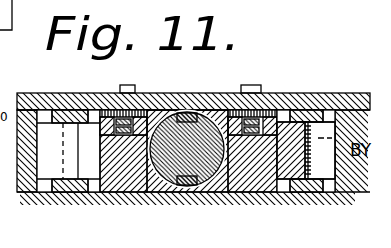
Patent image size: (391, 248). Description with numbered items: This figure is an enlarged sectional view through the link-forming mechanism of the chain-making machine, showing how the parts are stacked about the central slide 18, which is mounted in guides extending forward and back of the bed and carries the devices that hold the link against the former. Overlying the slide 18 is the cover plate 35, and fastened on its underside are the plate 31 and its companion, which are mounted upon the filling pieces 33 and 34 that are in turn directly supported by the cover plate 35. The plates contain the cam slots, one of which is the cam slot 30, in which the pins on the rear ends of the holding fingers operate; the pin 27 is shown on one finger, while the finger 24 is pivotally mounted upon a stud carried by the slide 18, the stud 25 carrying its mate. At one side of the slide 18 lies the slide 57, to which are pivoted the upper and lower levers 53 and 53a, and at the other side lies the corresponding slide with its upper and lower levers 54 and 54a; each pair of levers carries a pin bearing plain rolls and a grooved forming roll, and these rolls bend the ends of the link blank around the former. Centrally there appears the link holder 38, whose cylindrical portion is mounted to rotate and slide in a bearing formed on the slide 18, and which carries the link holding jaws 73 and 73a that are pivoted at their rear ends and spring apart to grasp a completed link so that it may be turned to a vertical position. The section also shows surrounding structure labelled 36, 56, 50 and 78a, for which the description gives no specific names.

The cover plate 35 is at (27, 93).
The nut 36 is at (126, 85).
The link holder 38 is at (238, 93).
The cam slot 30 is at (282, 110).
The slide 18 is at (234, 186).
The slide 57 is at (48, 158).
The upper lever 53 is at (60, 93).
The lower lever 53a is at (40, 192).
The pin 27 is at (108, 141).
The stud 25 is at (79, 151).
The filling piece 33 is at (108, 110).
The filling piece 34 is at (270, 110).
The plate 31 is at (151, 93).
The link holding jaw 73 is at (209, 118).
The upper seat 78a is at (186, 113).
The link holding jaw 73a is at (187, 185).
The right chamber 56 is at (312, 145).
The plunger 50 is at (358, 120).
The upper lever 54 is at (341, 93).
The lower lever 54a is at (333, 192).
The finger 24 is at (306, 152).